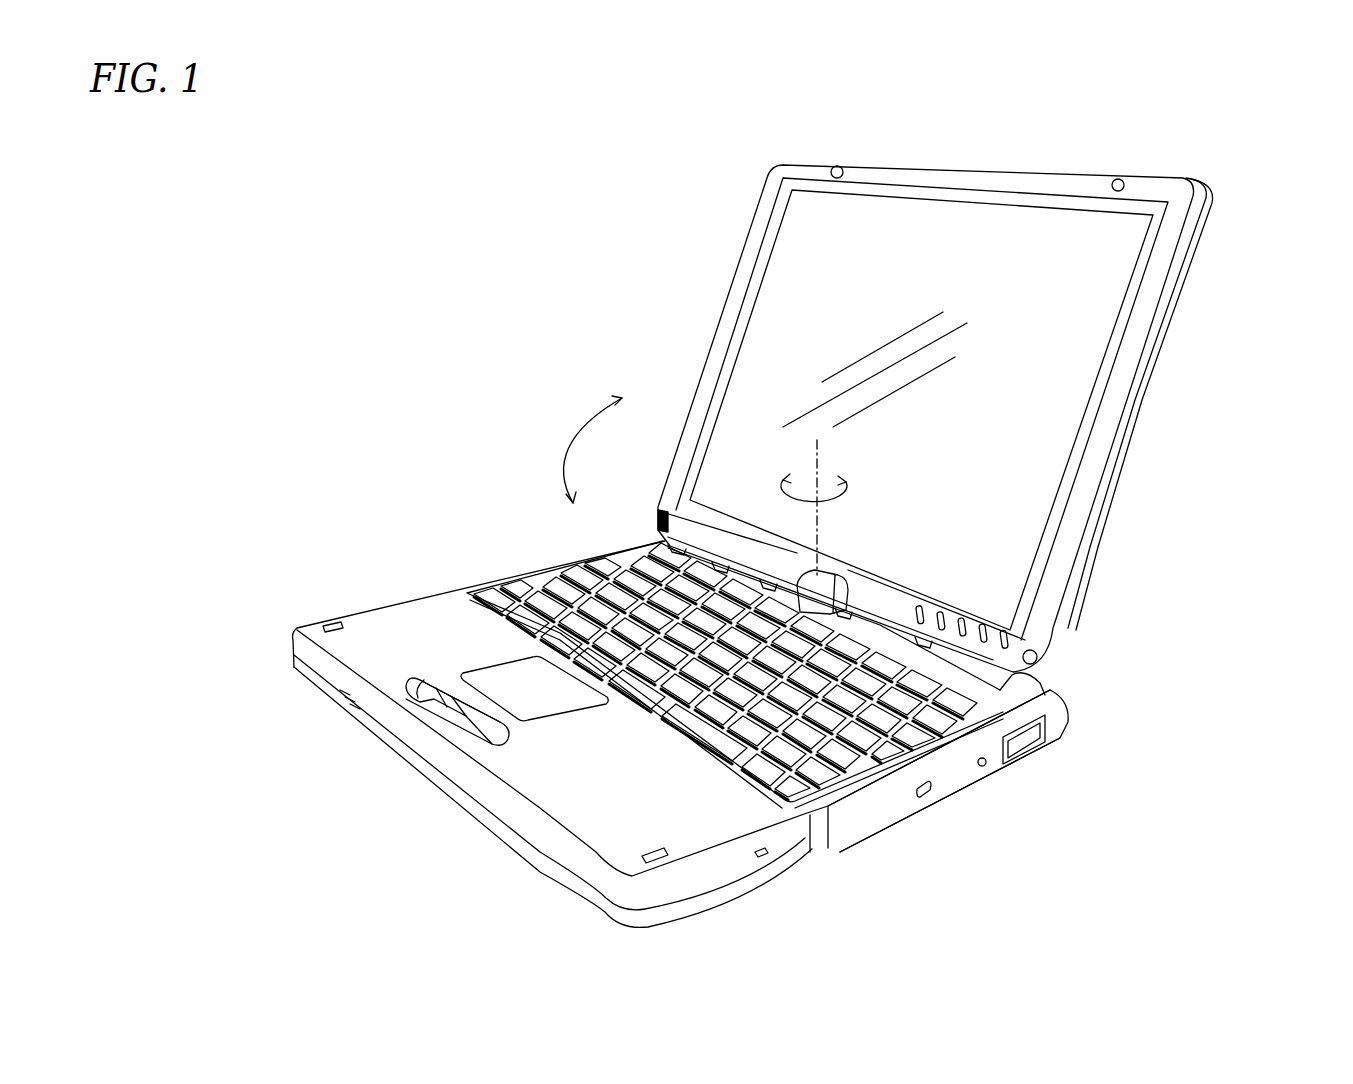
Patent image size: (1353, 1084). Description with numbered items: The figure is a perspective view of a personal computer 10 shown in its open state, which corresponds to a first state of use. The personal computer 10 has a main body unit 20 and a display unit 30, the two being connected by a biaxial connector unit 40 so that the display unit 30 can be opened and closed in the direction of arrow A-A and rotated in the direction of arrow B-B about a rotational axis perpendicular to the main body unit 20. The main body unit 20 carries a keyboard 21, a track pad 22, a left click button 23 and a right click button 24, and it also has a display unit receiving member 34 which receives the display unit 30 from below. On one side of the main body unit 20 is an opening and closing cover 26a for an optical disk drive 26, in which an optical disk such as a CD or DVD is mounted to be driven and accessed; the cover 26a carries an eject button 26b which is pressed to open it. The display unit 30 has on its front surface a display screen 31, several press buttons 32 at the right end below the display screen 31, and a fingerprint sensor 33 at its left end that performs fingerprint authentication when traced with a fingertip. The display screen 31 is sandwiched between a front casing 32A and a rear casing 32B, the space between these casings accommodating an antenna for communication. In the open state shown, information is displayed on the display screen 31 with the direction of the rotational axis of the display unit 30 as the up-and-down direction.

The personal computer 10 is at (1222, 252).
The main body unit 20 is at (380, 587).
The keyboard 21 is at (563, 587).
The track pad 22 is at (500, 677).
The left click button 23 is at (424, 698).
The right click button 24 is at (487, 730).
The optical disk drive 26 is at (873, 837).
The opening and closing cover 26a is at (853, 817).
The eject button 26b is at (920, 793).
The display unit 30 is at (687, 338).
The display screen 31 is at (1073, 360).
The press buttons 32 is at (985, 633).
The front casing 32A is at (1163, 187).
The rear casing 32B is at (1180, 297).
The fingerprint sensor 33 is at (658, 525).
The display unit receiving member 34 is at (1040, 683).
The biaxial connector unit 40 is at (843, 563).